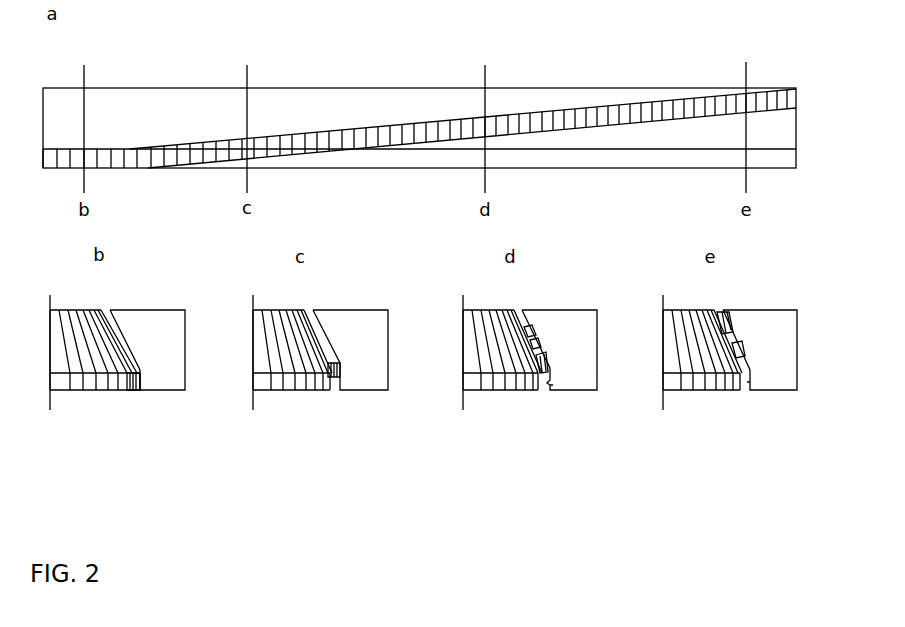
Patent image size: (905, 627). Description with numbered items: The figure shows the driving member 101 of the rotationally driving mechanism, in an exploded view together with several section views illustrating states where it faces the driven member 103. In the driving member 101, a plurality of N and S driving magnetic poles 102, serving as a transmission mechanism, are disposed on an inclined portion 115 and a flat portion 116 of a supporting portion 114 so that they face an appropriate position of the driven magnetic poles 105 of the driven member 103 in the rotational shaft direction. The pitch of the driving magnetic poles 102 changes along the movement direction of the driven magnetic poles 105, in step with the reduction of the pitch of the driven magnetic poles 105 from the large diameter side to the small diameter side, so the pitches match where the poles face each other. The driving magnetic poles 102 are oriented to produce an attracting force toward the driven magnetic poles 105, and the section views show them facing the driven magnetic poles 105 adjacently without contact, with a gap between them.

The driving member 101 is at (171, 75).
The driving magnetic poles 102 is at (215, 155).
The driven member 103 is at (94, 403).
The driven magnetic poles 105 is at (95, 327).
The supporting portion 114 is at (433, 88).
The inclined portion 115 is at (340, 107).
The flat portion 116 is at (388, 160).